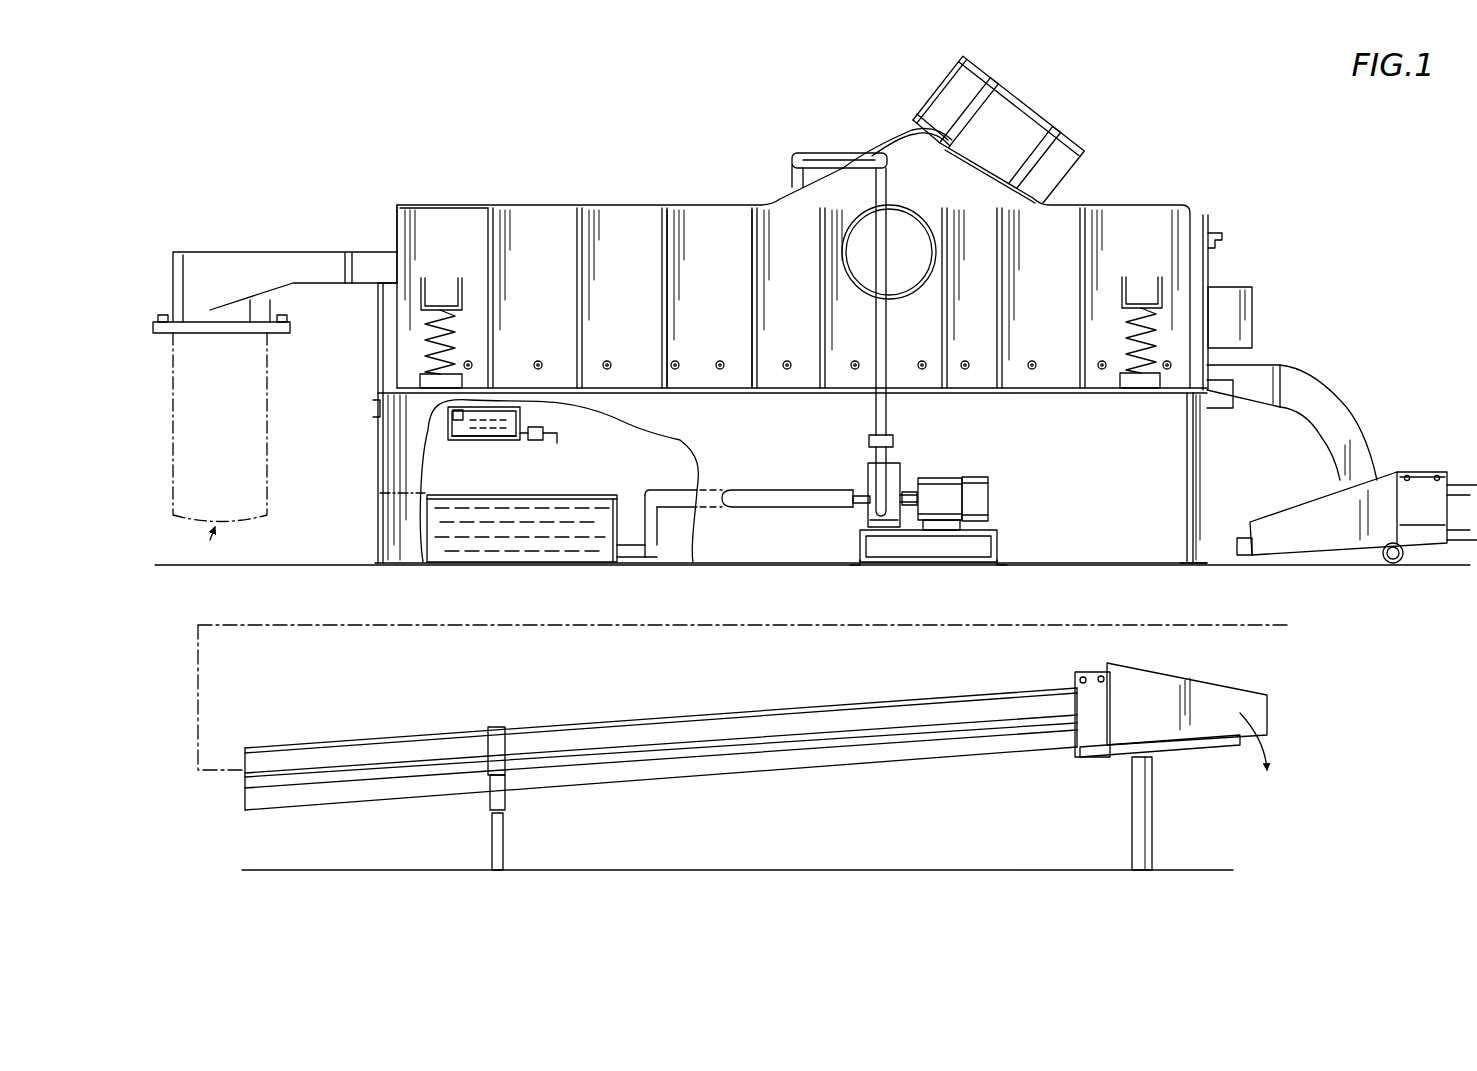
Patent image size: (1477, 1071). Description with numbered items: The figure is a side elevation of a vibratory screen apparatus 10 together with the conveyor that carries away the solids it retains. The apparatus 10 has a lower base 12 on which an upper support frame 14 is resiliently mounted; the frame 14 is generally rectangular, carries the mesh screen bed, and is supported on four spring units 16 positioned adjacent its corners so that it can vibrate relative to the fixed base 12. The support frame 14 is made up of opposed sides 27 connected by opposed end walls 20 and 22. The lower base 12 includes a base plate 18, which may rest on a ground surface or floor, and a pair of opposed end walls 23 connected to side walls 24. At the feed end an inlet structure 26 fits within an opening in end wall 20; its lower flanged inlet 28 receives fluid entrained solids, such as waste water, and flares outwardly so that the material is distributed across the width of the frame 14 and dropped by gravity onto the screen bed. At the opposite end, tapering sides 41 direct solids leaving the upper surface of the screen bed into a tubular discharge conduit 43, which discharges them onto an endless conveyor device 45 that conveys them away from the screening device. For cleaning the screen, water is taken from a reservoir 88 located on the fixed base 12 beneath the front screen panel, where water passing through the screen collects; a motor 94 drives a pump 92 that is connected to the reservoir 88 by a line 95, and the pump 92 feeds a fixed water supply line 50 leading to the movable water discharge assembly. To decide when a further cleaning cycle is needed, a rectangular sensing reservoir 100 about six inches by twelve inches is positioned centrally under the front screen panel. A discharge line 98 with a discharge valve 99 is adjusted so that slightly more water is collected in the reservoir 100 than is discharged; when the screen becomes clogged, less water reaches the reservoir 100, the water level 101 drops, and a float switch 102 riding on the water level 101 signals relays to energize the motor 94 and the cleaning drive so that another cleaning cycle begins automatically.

The vibratory screen apparatus 10 is at (1128, 200).
The lower base 12 is at (390, 552).
The upper support frame 14 is at (545, 225).
The spring units 16 is at (452, 345).
The base plate 18 is at (838, 568).
The end wall 20 is at (396, 215).
The end wall 22 is at (1195, 278).
The end walls 23 is at (377, 512).
The side walls 24 is at (713, 447).
The inlet structure 26 is at (216, 250).
The sides 27 is at (704, 292).
The inlet 28 is at (255, 335).
The tapering sides 41 is at (1222, 395).
The tubular discharge conduit 43 is at (1312, 397).
The endless conveyor device 45 is at (1432, 470).
The water supply line 50 is at (888, 328).
The reservoir 88 is at (483, 548).
The pump 92 is at (903, 463).
The motor 94 is at (985, 497).
The line 95 is at (810, 490).
The discharge line 98 is at (530, 442).
The discharge valve 99 is at (545, 428).
The sensing reservoir 100 is at (474, 442).
The water level 101 is at (506, 408).
The float switch 102 is at (452, 416).